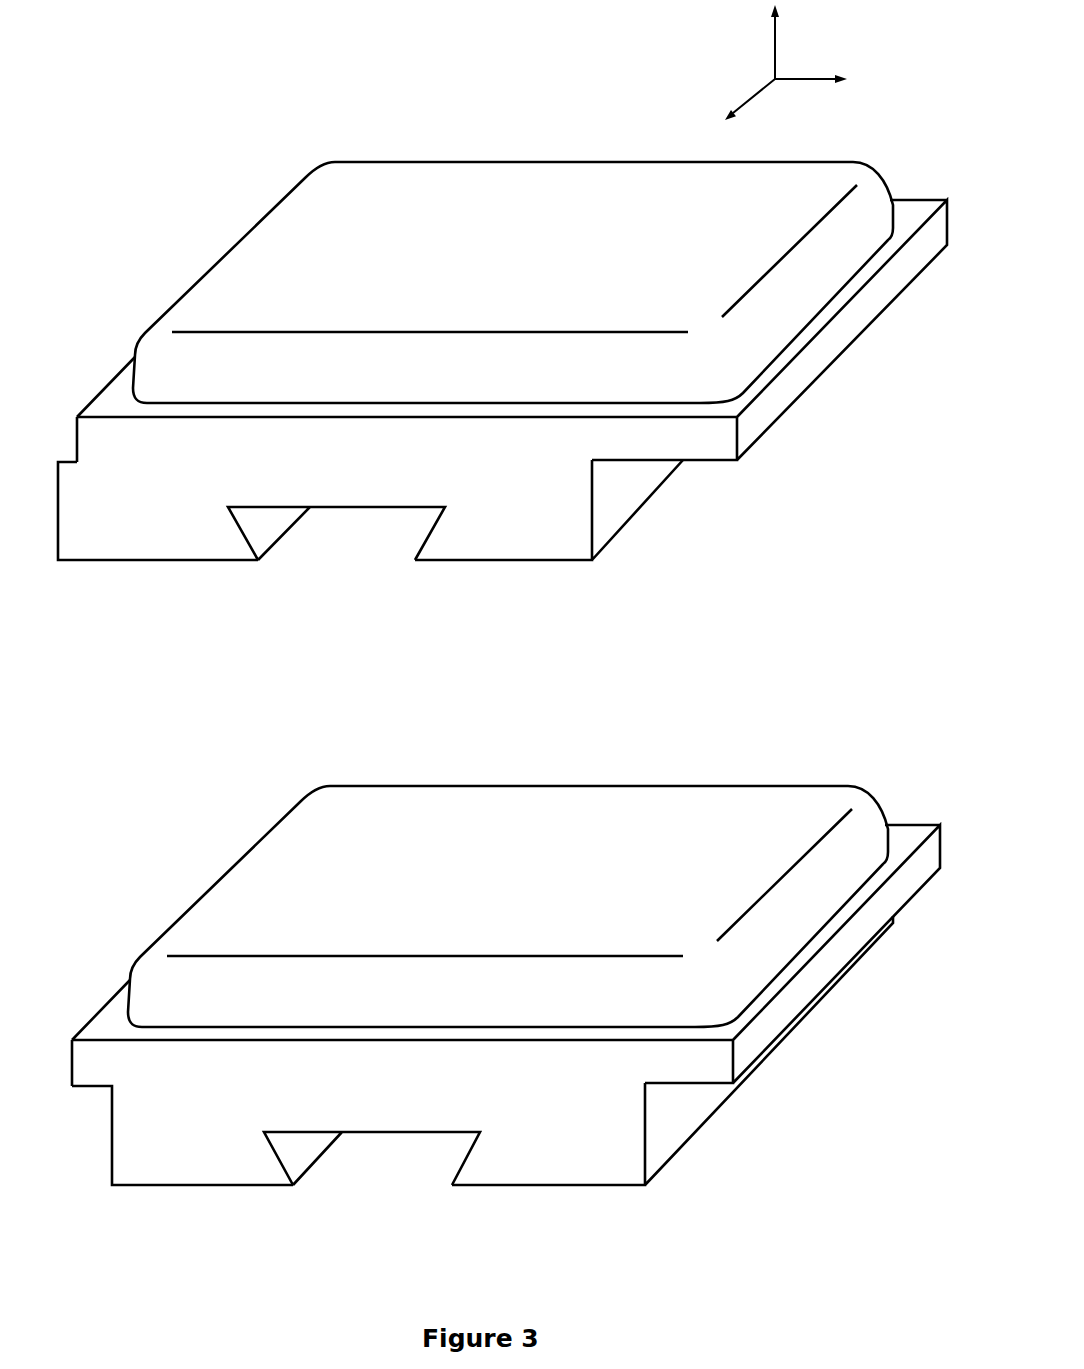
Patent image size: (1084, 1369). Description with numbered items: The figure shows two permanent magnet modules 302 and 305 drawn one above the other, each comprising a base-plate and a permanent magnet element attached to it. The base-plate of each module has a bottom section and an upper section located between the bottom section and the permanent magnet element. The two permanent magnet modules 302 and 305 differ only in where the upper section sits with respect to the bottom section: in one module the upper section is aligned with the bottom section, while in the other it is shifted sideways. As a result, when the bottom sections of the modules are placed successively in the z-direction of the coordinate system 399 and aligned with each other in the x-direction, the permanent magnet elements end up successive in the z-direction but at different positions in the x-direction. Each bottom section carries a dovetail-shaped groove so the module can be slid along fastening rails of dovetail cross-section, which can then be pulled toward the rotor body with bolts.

The permanent magnet module 302 is at (160, 240).
The permanent magnet module 305 is at (190, 848).
The coordinate system 399 is at (832, 57).